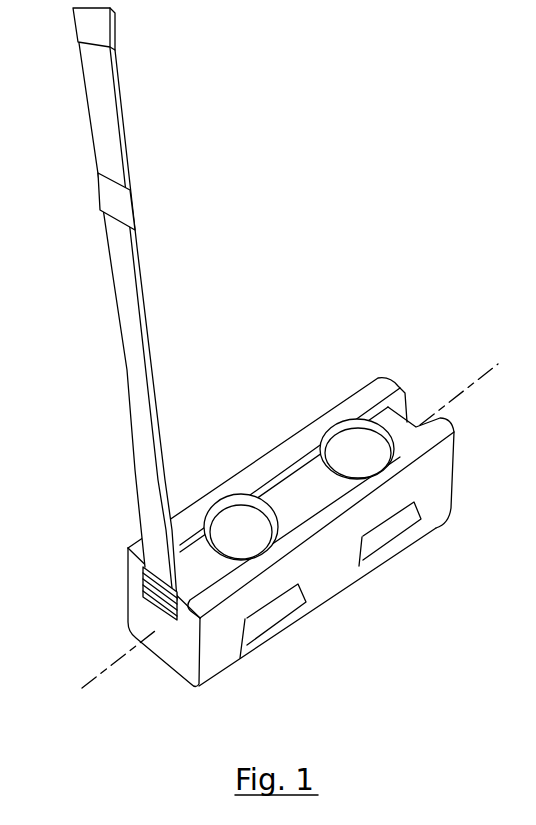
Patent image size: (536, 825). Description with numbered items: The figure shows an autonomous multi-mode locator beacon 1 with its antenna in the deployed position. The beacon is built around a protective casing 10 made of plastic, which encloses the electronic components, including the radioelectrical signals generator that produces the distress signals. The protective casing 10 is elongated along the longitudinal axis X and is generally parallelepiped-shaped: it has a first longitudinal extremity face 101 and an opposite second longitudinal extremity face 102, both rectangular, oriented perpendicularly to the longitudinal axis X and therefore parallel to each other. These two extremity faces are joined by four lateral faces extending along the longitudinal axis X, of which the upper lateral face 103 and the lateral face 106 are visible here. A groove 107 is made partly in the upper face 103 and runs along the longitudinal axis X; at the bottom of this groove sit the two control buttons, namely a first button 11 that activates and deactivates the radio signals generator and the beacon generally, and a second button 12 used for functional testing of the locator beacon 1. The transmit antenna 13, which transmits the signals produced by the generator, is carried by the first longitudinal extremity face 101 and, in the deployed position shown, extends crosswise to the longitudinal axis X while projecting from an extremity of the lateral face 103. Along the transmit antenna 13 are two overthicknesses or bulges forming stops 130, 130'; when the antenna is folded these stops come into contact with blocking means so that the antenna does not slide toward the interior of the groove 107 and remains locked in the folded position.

The multi-mode locator beacon 1 is at (264, 224).
The protective casing 10 is at (352, 393).
The first button 11 is at (245, 532).
The second button 12 is at (363, 463).
The transmit antenna 13 is at (125, 283).
The first longitudinal extremity face 101 is at (142, 613).
The second longitudinal extremity face 102 is at (396, 390).
The lateral face 103 is at (283, 463).
The lateral face 106 is at (217, 637).
The groove 107 is at (307, 480).
The stop 130 is at (147, 29).
The stop 130' is at (162, 190).
The longitudinal axis X is at (279, 535).